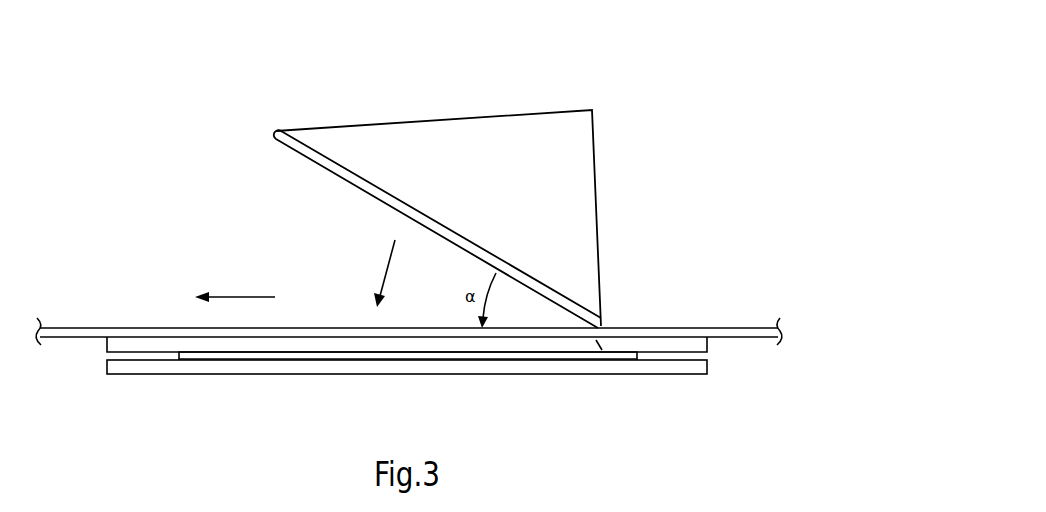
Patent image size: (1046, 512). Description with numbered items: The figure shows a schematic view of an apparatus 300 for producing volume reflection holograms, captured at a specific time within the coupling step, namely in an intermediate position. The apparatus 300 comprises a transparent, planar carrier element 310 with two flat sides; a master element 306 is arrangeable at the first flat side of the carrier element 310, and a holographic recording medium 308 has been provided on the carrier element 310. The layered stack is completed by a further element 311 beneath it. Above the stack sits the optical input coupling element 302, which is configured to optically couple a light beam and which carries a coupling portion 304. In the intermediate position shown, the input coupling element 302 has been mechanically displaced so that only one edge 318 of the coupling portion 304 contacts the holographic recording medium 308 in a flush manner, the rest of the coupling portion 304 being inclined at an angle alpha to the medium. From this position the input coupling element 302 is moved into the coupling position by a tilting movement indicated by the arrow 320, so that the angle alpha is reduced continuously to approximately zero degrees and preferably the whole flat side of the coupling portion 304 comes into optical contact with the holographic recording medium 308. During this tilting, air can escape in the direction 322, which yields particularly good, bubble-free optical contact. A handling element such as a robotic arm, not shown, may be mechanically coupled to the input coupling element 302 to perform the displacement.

The apparatus 300 is at (668, 81).
The optical input coupling element 302 is at (475, 137).
The coupling portion 304 is at (305, 162).
The master element 306 is at (612, 355).
The holographic recording medium 308 is at (628, 334).
The carrier element 310 is at (685, 346).
The bottom housing 311 is at (684, 363).
The edge 318 is at (597, 347).
The arrow 320 is at (383, 273).
The direction 322 is at (242, 296).